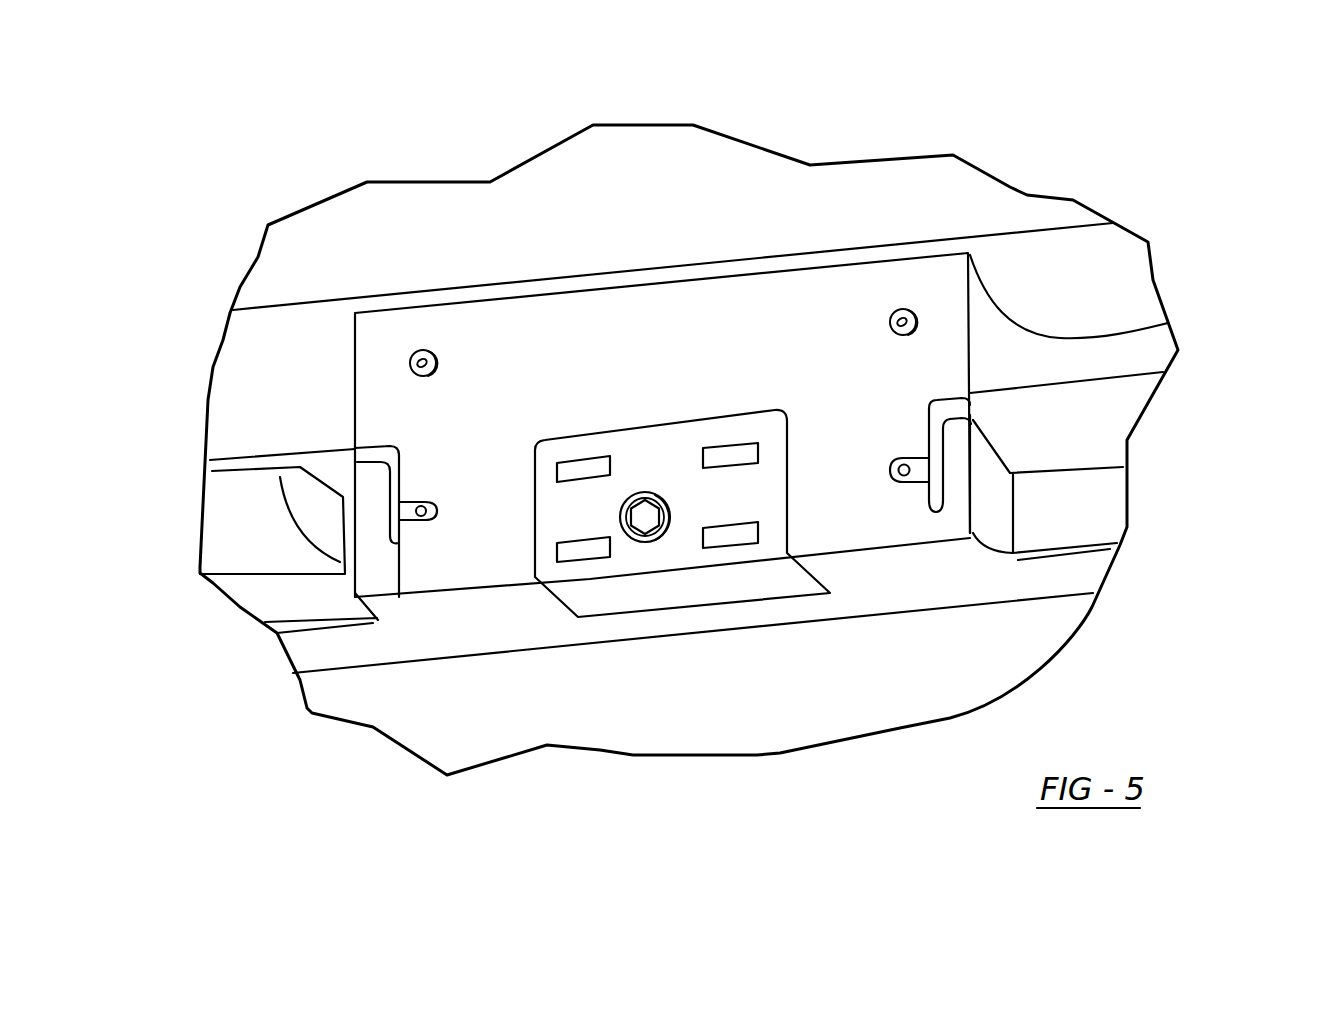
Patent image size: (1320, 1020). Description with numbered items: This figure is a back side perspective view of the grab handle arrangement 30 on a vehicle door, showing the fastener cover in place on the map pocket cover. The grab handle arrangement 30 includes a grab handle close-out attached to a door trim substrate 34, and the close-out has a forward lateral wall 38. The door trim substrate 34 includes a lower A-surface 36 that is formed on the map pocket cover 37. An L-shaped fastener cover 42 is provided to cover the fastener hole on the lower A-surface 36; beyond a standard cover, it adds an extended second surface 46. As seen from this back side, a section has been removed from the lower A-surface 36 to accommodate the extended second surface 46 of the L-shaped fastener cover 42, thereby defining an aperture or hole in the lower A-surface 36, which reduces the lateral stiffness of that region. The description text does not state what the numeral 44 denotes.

The grab handle arrangement 30 is at (601, 106).
The door trim substrate 34 is at (252, 353).
The lower A-surface 36 is at (497, 617).
The map pocket cover 37 is at (493, 519).
The forward lateral wall 38 is at (983, 347).
The L-shaped fastener cover 42 is at (633, 550).
The lower panel 44 is at (880, 577).
The extended second surface 46 is at (730, 582).